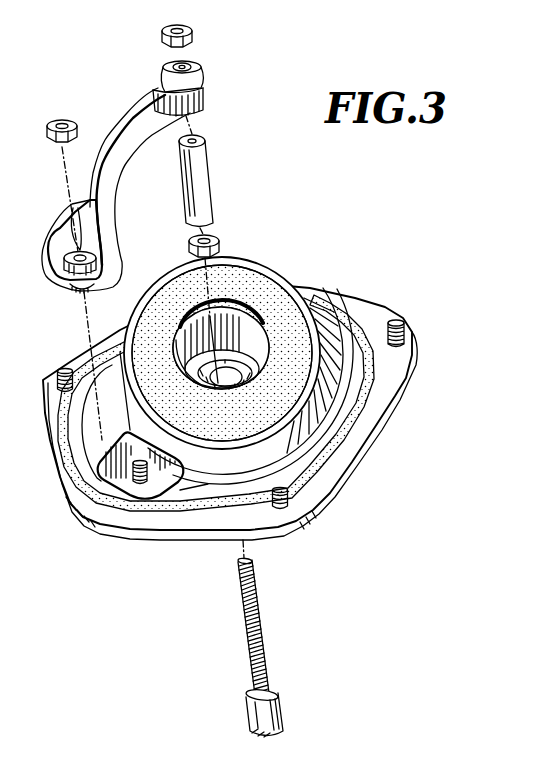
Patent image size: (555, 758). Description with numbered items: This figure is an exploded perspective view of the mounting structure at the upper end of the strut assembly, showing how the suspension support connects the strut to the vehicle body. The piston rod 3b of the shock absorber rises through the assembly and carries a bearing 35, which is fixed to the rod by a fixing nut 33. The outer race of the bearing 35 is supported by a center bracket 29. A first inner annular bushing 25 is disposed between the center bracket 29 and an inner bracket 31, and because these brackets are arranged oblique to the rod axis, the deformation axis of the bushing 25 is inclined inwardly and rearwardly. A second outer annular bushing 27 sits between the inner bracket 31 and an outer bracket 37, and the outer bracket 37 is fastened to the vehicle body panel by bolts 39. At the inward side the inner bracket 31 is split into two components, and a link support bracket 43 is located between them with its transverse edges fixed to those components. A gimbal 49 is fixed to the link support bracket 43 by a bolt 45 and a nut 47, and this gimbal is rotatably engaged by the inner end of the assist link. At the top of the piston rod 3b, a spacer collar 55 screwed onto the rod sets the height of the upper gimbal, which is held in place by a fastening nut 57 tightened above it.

The piston rod 3b is at (282, 712).
The first inner annular bushing 25 is at (294, 341).
The second outer annular bushing 27 is at (367, 389).
The center bracket 29 is at (243, 317).
The inner bracket 31 is at (262, 262).
The fixing nut 33 is at (214, 240).
The bearing 35 is at (265, 362).
The outer bracket 37 is at (372, 322).
The bolt 39 is at (55, 377).
The link support bracket 43 is at (163, 467).
The bolt 45 is at (140, 485).
The nut 47 is at (64, 120).
The gimbal 49 is at (122, 177).
The spacer collar 55 is at (200, 170).
The fastening nut 57 is at (188, 26).